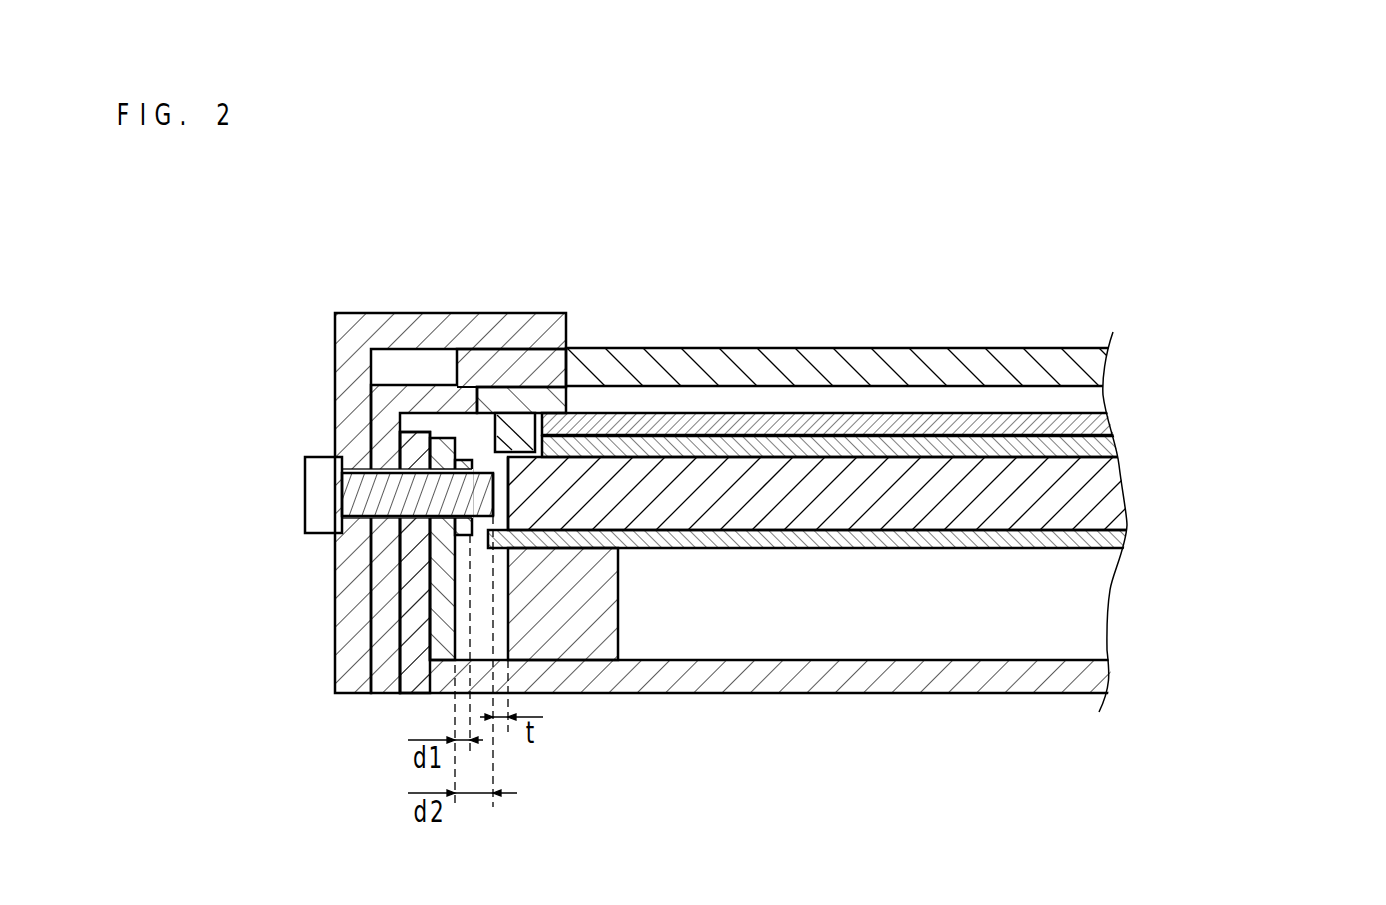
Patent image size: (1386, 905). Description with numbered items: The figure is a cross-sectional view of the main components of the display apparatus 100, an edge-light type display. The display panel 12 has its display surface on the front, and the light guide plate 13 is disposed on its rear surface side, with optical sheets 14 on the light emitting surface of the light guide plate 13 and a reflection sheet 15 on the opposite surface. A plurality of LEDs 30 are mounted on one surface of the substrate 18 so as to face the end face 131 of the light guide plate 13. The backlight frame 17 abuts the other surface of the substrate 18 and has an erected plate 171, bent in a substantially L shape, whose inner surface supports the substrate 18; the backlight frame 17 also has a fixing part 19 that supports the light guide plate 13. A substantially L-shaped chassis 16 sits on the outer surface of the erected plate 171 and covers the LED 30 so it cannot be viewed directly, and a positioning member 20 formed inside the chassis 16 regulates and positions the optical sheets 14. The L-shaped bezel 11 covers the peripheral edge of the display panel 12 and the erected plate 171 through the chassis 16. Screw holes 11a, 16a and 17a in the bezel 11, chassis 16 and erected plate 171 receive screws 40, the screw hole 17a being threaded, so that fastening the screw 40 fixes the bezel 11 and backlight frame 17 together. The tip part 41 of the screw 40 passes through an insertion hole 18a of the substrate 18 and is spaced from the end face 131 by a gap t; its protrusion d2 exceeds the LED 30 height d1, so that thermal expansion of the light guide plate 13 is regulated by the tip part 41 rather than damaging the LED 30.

The display apparatus 100 is at (1343, 137).
The bezel 11 is at (385, 316).
The chassis 16 is at (420, 392).
The LED 30 is at (470, 460).
The positioning member 20 is at (523, 425).
The tip part 41 is at (622, 317).
The display panel 12 is at (880, 300).
The insertion hole 18a is at (430, 482).
The screw hole 11a is at (356, 476).
The screw hole 16a is at (385, 485).
The screw 40 is at (312, 507).
The screw hole 17a is at (412, 522).
The substrate 18 is at (438, 577).
The erected plate 171 is at (418, 620).
The optical sheets 14 is at (1172, 424).
The light guide plate 13 is at (1165, 487).
The reflection sheet 15 is at (1172, 556).
The backlight frame 17 is at (778, 747).
The fixing part 19 is at (613, 777).
The end face 131 is at (560, 807).